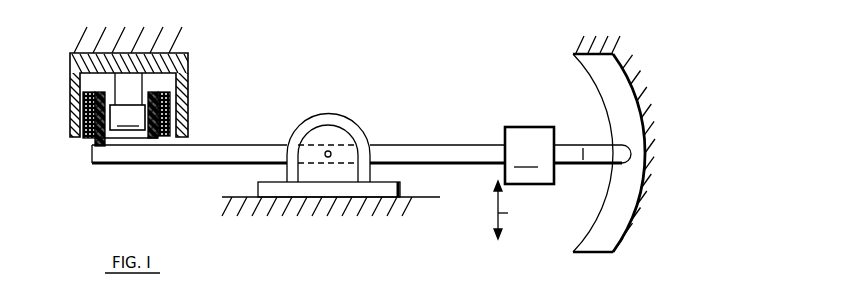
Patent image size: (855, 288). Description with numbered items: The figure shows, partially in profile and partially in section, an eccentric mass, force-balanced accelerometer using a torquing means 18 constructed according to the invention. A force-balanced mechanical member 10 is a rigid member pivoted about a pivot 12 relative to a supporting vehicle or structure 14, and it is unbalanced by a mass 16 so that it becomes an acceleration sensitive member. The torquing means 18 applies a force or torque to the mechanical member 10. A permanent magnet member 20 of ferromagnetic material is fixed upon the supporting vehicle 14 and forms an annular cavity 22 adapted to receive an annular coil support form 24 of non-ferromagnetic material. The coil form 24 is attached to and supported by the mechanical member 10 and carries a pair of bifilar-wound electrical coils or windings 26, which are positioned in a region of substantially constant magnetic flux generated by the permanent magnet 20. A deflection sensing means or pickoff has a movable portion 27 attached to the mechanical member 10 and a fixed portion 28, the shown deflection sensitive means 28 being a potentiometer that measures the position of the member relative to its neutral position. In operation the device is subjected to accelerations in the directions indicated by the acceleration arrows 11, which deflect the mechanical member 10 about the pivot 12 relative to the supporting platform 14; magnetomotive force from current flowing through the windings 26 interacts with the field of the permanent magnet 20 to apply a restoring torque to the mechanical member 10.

The force-balanced mechanical member 10 is at (410, 152).
The acceleration arrows 11 is at (512, 210).
The pivot 12 is at (324, 150).
The supporting vehicle or structure 14 is at (178, 48).
The mass 16 is at (529, 155).
The torquing means 18 is at (68, 132).
The permanent magnet member 20 is at (127, 117).
The annular cavity 22 is at (163, 83).
The annular coil support form 24 is at (90, 152).
The electrical coils or windings 26 is at (165, 113).
The movable portion of deflection sensing means 27 is at (584, 156).
The fixed portion of deflection sensing means 28 is at (620, 114).